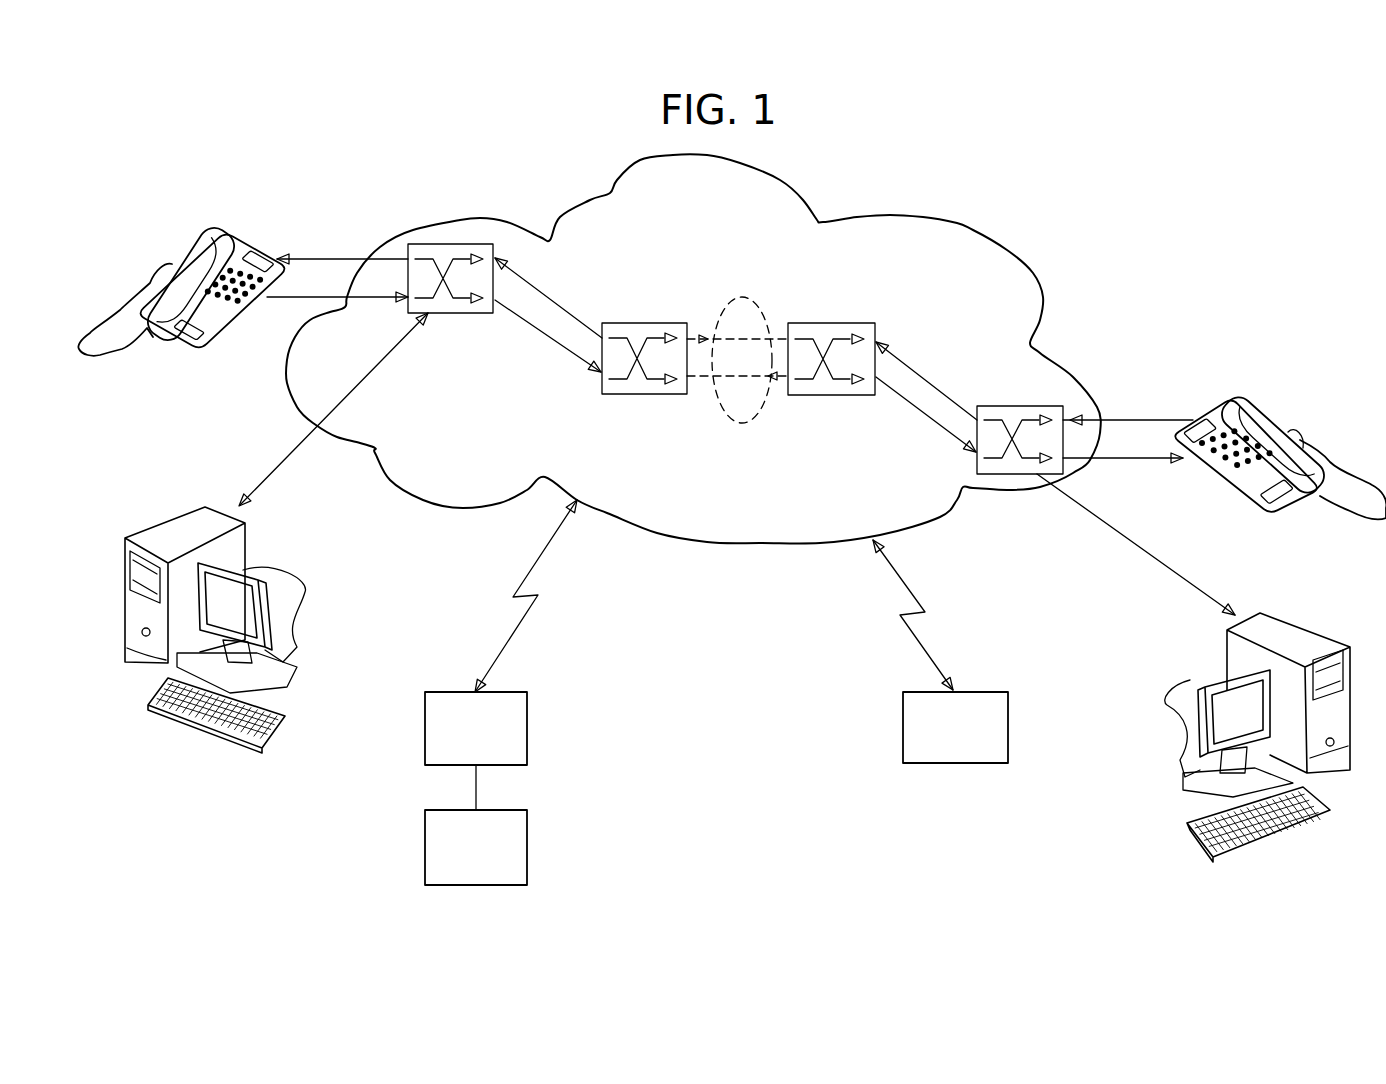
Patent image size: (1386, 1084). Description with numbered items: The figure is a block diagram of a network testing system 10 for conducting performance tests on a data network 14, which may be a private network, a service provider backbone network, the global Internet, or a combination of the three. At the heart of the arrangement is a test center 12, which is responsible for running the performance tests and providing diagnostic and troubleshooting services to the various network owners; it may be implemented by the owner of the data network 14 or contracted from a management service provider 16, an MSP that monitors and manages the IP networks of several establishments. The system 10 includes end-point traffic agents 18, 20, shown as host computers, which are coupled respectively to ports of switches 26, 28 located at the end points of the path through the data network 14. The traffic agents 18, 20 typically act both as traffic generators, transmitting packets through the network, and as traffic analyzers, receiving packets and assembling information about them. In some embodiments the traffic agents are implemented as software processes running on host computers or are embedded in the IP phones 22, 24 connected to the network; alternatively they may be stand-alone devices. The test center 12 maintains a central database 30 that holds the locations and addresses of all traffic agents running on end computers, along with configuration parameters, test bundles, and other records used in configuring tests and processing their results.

The network testing system 10 is at (300, 128).
The test center 12 is at (527, 730).
The data network 14 is at (887, 216).
The management service provider 16 is at (1008, 718).
The end-point traffic agent 18 is at (165, 530).
The end-point traffic agent 20 is at (1300, 633).
The IP phone 22 is at (195, 268).
The IP phone 24 is at (1257, 414).
The switch 26 is at (468, 314).
The switch 28 is at (1021, 407).
The central database 30 is at (527, 850).